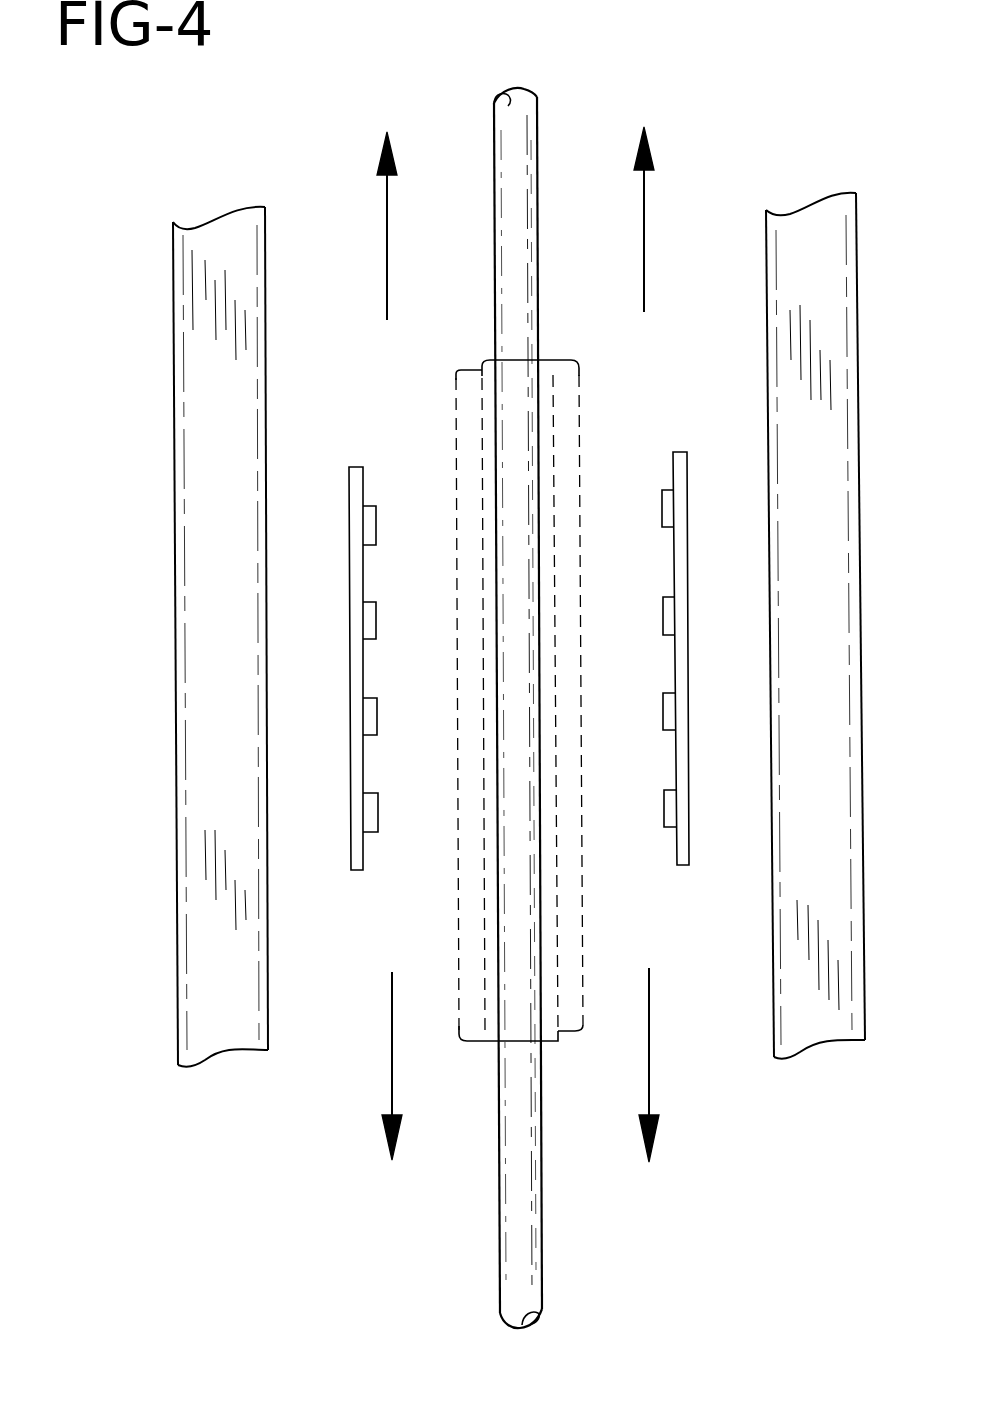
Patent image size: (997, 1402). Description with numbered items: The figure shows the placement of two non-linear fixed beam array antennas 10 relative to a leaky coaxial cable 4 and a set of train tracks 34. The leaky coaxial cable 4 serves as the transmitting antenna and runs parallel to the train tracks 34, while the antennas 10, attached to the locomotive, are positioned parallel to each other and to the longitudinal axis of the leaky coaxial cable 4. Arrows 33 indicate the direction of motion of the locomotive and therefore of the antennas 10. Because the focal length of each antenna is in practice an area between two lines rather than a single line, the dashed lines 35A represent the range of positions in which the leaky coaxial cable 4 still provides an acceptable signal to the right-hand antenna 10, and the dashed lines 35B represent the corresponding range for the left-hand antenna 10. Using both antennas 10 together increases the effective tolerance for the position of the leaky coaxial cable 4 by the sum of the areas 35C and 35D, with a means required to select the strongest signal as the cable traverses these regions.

The leaky coaxial cable 4 is at (537, 165).
The non-linear fixed beam array antenna 10 is at (356, 467).
The arrows 33 is at (387, 207).
The train tracks 34 is at (176, 608).
The dashed lines 35A is at (548, 362).
The dashed lines 35B is at (488, 1042).
The area 35C is at (567, 1032).
The area 35D is at (469, 368).